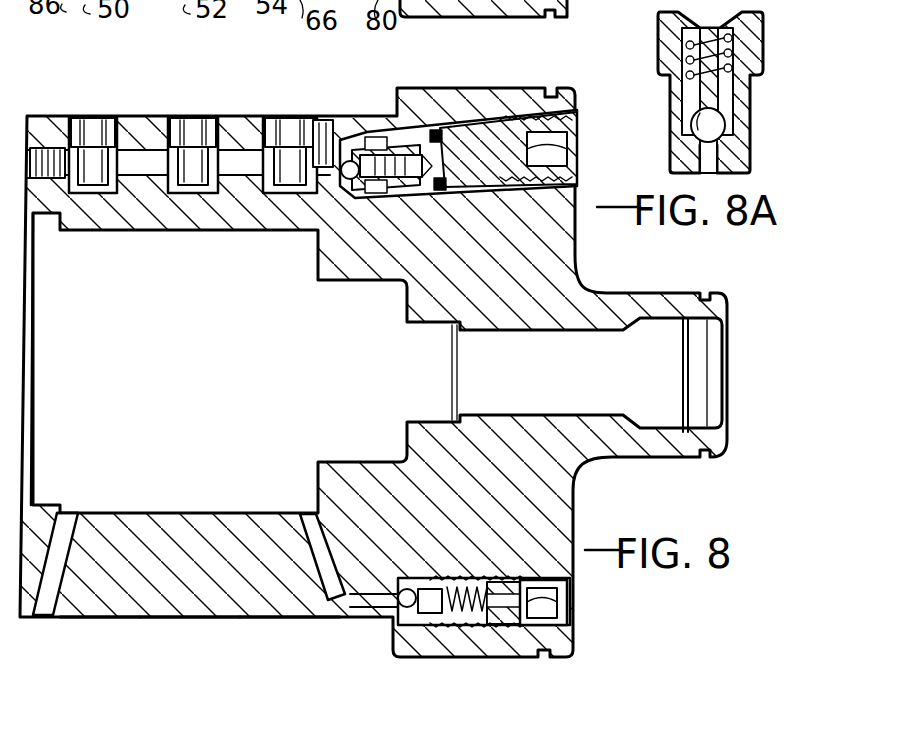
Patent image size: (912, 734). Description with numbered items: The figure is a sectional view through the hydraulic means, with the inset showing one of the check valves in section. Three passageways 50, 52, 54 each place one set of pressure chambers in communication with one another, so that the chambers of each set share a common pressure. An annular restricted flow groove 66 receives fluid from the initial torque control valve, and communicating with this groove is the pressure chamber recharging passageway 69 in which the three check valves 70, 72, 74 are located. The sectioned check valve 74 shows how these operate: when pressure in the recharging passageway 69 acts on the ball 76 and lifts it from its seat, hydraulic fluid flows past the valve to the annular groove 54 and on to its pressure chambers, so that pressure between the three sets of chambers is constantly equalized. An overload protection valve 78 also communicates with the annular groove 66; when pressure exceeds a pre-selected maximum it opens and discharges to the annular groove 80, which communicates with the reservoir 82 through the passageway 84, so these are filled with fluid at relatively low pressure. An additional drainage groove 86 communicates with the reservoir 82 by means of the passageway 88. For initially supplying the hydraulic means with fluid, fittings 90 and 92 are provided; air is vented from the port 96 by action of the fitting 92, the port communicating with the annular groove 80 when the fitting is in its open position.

In FIG. 8, the passageway 50 is at (88, 619).
In FIG. 8, the passageway 52 is at (185, 619).
In FIG. 8, the passageway 54 is at (282, 619).
In FIG. 8, the annular restricted flow groove 66 is at (335, 120).
In FIG. 8, the pressure chamber recharging passageway 69 is at (140, 168).
In FIG. 8, the check valve 70 is at (100, 132).
In FIG. 8, the check valve 72 is at (207, 132).
In FIG. 8, the check valve 74 is at (297, 130).
In FIG. 8A, the check valve 74 is at (763, 58).
In FIG. 8A, the ball 76 is at (733, 128).
In FIG. 8, the overload protection valve 78 is at (508, 150).
In FIG. 8, the annular groove 80 is at (489, 365).
In FIG. 8, the reservoir 82 is at (236, 512).
In FIG. 8, the passageway 84 is at (300, 512).
In FIG. 8, the drainage groove 86 is at (53, 125).
In FIG. 8, the passageway 88 is at (76, 512).
In FIG. 8, the fitting 90 is at (455, 15).
In FIG. 8, the fitting 92 is at (488, 640).
In FIG. 8, the port 96 is at (570, 598).